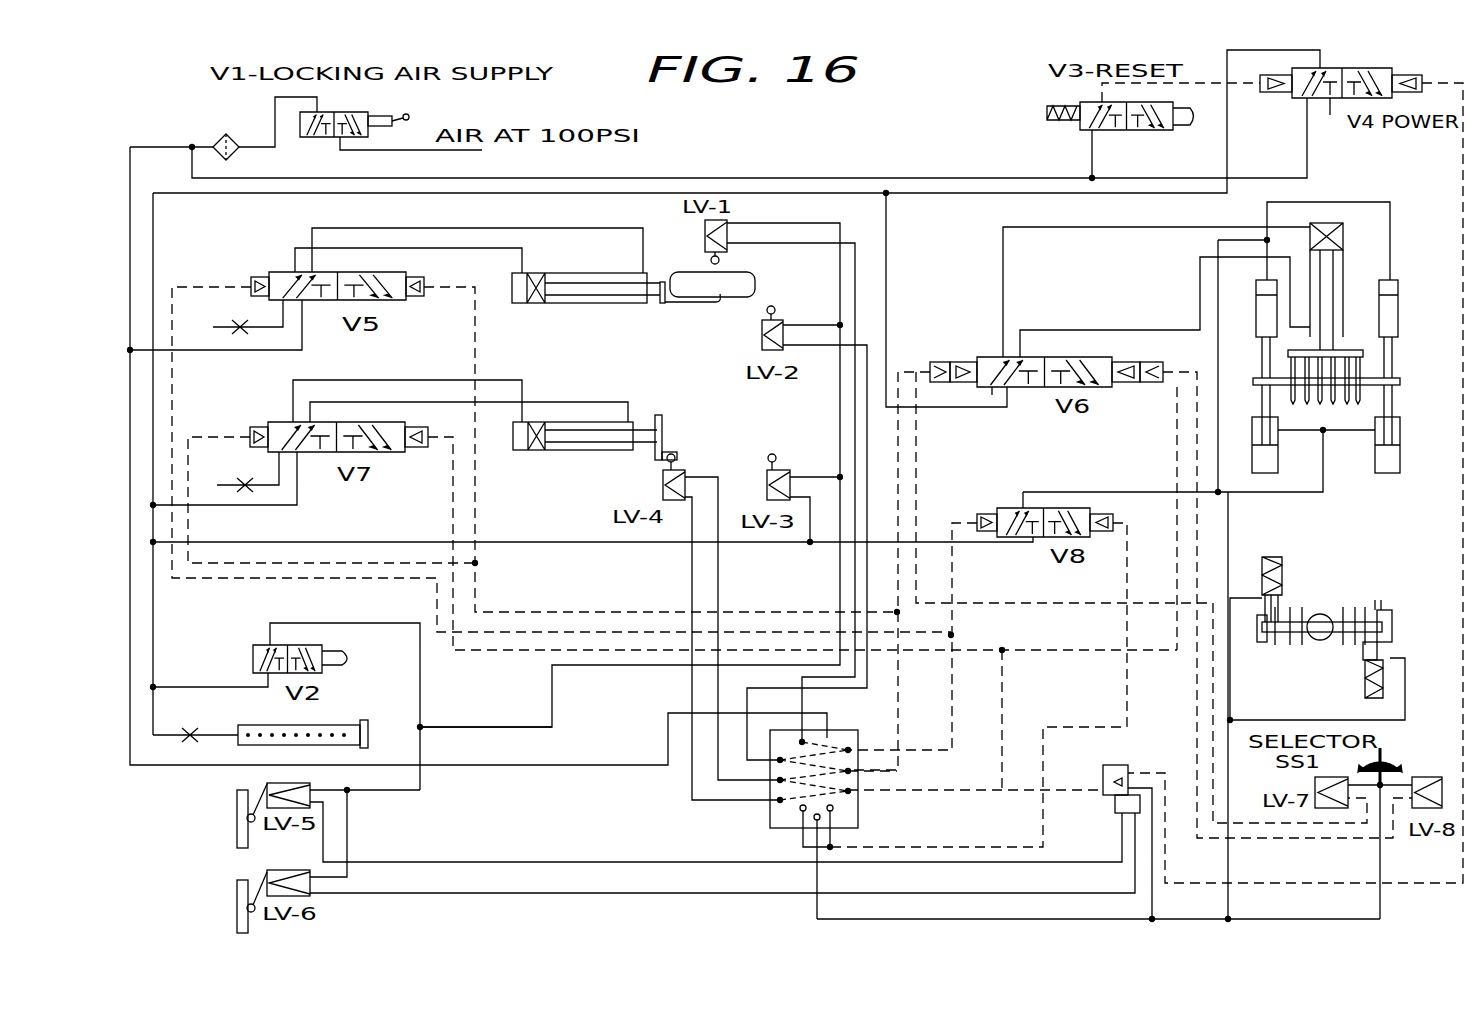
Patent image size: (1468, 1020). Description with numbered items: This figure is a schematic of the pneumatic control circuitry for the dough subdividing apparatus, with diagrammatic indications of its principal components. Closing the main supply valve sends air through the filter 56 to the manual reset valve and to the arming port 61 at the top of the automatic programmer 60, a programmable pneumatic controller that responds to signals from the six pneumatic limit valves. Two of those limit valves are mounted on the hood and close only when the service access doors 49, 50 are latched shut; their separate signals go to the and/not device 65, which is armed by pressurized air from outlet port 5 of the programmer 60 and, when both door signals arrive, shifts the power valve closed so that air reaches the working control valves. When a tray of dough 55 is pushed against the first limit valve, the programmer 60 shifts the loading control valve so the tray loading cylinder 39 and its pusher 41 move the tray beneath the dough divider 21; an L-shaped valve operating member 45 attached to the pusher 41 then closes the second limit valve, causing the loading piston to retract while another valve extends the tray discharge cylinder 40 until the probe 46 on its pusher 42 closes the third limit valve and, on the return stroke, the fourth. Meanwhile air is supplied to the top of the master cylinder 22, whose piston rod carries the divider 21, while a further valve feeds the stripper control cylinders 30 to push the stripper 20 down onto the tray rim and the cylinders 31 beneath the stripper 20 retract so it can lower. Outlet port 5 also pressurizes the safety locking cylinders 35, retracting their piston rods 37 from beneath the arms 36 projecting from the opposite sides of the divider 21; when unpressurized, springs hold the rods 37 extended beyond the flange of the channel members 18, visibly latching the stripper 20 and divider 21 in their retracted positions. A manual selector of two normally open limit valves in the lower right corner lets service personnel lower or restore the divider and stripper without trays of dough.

The outlet port 5 is at (800, 836).
The channel members 18 is at (1392, 621).
The stripper 20 is at (1405, 385).
The dough divider 21 is at (1367, 353).
The master cylinder 22 is at (1345, 262).
The stripper control cylinders 30 is at (1400, 292).
The cylinders underlying stripper 31 is at (1278, 468).
The safety locking cylinders 35 is at (1282, 562).
The arms 36 is at (1286, 628).
The piston rods 37 is at (1378, 651).
The tray loading cylinder 39 is at (594, 304).
The tray discharge cylinder 40 is at (562, 451).
The pusher 41 is at (655, 305).
The pusher 42 is at (663, 421).
The valve operating member 45 is at (688, 305).
The probe 46 is at (677, 454).
The service access door 49 is at (237, 820).
The service access door 50 is at (237, 908).
The tray of dough 55 is at (755, 275).
The filter 56 is at (224, 134).
The automatic programmer 60 is at (765, 813).
The arming port 61 is at (829, 740).
The and/not device 65 is at (1103, 786).